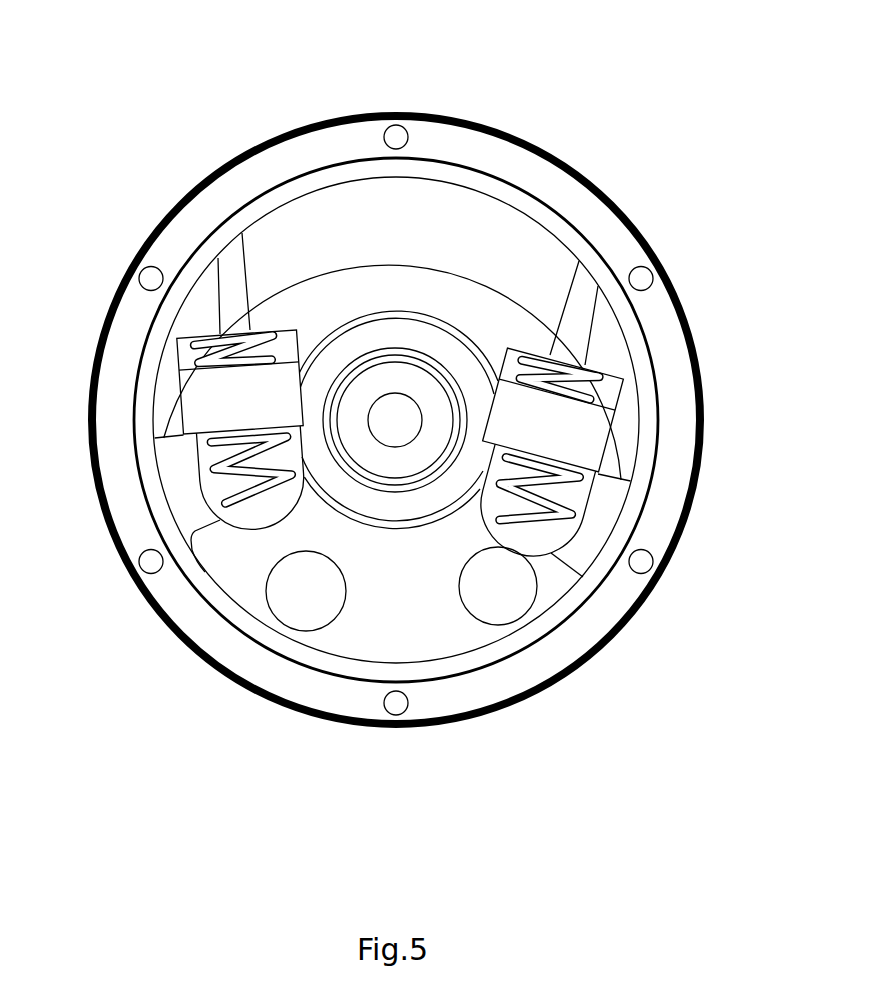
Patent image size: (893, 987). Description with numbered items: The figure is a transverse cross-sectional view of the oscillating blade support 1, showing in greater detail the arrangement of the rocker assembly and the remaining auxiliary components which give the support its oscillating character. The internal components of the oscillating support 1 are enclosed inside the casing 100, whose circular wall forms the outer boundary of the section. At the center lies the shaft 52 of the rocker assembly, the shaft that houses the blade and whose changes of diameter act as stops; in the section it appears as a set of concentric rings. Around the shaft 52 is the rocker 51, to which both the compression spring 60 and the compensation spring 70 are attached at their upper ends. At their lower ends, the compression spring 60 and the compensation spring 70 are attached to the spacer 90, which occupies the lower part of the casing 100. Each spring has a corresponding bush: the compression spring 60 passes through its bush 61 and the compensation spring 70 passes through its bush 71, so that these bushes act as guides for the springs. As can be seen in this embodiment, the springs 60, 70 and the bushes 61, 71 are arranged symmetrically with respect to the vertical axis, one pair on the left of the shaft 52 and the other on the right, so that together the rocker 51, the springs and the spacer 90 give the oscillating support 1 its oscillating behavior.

The oscillating support 1 is at (200, 115).
The casing 100 is at (637, 223).
The rocker 51 is at (520, 270).
The shaft 52 is at (400, 323).
The spacer 90 is at (243, 572).
The bush 71 is at (198, 401).
The compensation spring 70 is at (230, 462).
The bush 61 is at (590, 442).
The compression spring 60 is at (578, 489).